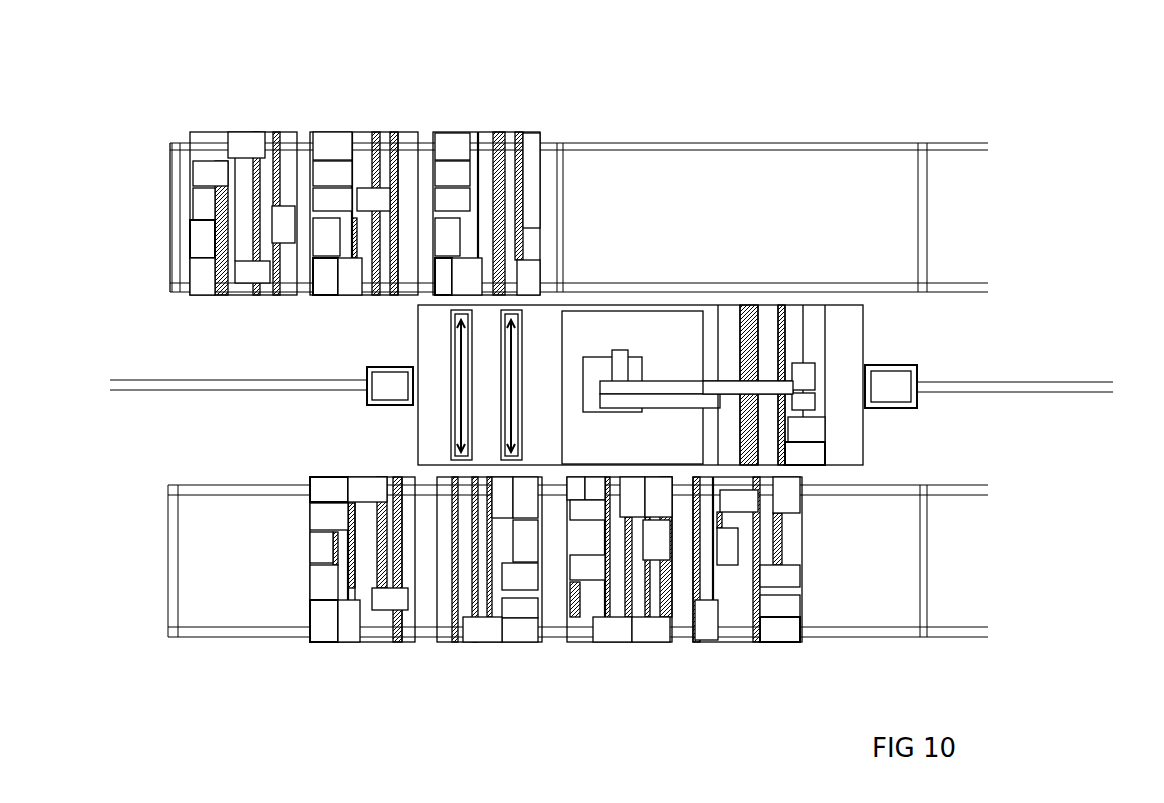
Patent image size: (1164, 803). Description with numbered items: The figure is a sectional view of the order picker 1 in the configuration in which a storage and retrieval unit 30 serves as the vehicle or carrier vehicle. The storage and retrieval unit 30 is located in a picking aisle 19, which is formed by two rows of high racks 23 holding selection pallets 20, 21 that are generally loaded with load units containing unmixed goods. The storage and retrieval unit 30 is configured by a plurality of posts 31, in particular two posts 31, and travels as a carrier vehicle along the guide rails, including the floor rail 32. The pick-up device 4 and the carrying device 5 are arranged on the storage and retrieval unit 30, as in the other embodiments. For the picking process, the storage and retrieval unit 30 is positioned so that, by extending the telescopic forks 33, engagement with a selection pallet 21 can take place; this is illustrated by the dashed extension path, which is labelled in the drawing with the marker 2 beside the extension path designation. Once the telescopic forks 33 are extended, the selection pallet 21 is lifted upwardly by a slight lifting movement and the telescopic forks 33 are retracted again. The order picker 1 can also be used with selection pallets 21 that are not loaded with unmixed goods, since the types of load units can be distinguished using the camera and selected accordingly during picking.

The order picker 1 is at (797, 305).
The direction of movement 2 is at (504, 410).
The pick-up device 4 is at (500, 460).
The carrying device 5 is at (773, 305).
The picking aisle 19 is at (183, 337).
The selection pallet 20 is at (372, 180).
The selection pallet 21 is at (488, 171).
The high rack 23 is at (840, 143).
The storage and retrieval unit 30 is at (653, 305).
The post 31 is at (365, 372).
The floor rail 32 is at (1093, 393).
The telescopic fork 33 is at (470, 340).